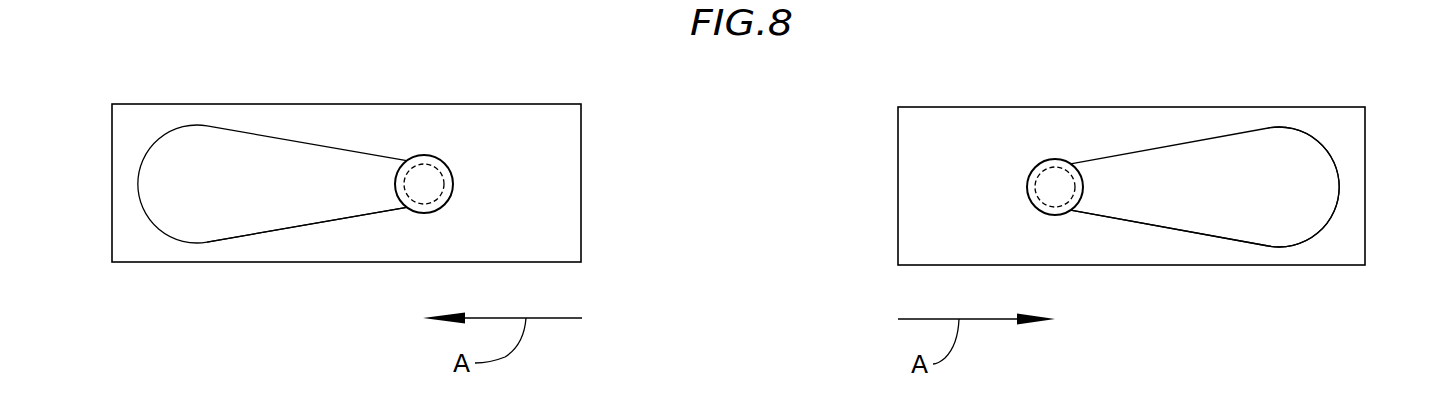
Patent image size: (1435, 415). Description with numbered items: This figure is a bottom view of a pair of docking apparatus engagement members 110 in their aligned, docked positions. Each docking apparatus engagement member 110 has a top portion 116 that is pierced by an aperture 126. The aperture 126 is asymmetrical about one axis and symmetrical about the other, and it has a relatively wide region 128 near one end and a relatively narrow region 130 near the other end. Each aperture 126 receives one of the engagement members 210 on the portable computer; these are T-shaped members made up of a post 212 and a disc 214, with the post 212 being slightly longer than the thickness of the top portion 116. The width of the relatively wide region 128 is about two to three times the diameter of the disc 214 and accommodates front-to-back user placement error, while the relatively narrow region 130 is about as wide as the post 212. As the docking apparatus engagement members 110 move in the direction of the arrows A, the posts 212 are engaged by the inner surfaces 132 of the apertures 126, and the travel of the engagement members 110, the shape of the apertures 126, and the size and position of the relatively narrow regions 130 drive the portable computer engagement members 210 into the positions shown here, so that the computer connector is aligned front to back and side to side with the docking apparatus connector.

The docking apparatus engagement member 110 is at (458, 90).
The top portion 116 is at (560, 125).
The aperture 126 is at (281, 129).
The inner surface 132 is at (283, 225).
The engagement member 210 is at (466, 169).
The relatively narrow region 130 is at (1066, 138).
The relatively wide region 128 is at (1314, 153).
The post 212 is at (1055, 175).
The disc 214 is at (1083, 193).